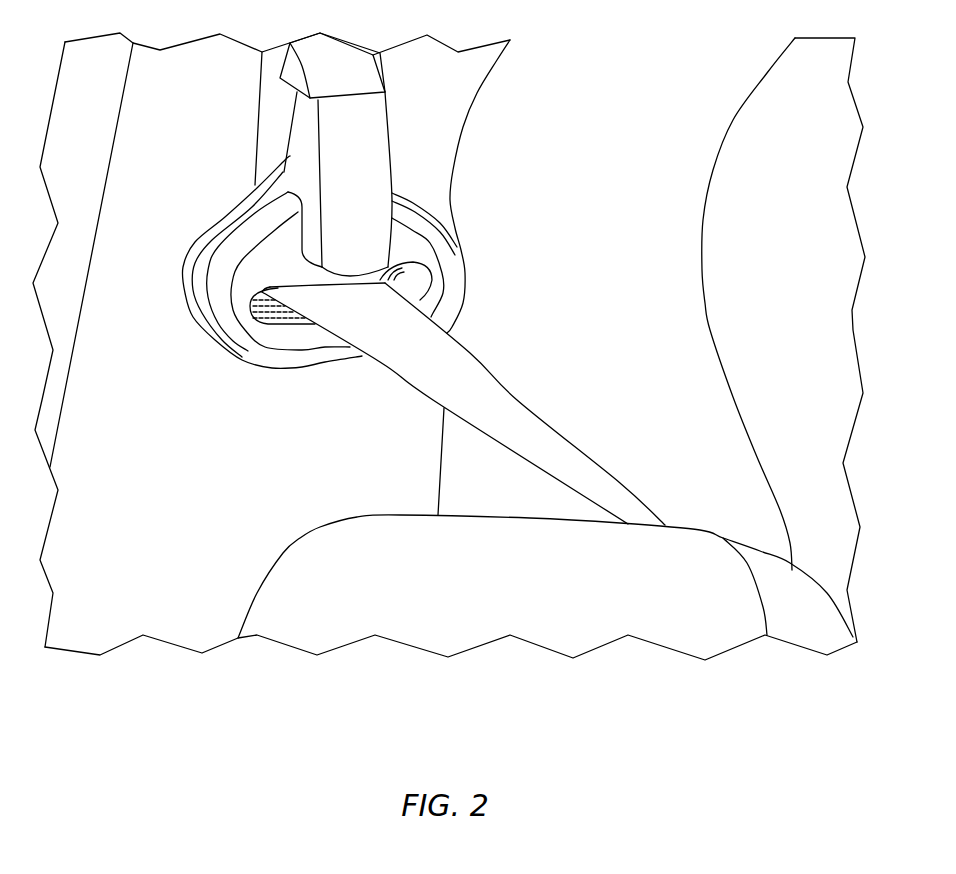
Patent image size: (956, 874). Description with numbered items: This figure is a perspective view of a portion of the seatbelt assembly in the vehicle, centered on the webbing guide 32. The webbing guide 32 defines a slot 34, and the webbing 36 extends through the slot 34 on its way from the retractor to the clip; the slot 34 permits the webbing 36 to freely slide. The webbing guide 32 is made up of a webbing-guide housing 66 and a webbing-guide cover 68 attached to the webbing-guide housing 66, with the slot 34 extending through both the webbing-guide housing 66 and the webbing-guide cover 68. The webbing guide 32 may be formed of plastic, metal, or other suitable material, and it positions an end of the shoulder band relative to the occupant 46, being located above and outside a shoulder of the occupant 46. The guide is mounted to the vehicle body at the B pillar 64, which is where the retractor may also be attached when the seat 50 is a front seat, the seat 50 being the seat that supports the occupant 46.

The webbing guide 32 is at (286, 296).
The slot 34 is at (287, 323).
The webbing 36 is at (508, 380).
The occupant 46 is at (710, 188).
The seat 50 is at (277, 562).
The B pillar 64 is at (465, 120).
The webbing-guide housing 66 is at (182, 295).
The webbing-guide cover 68 is at (272, 368).